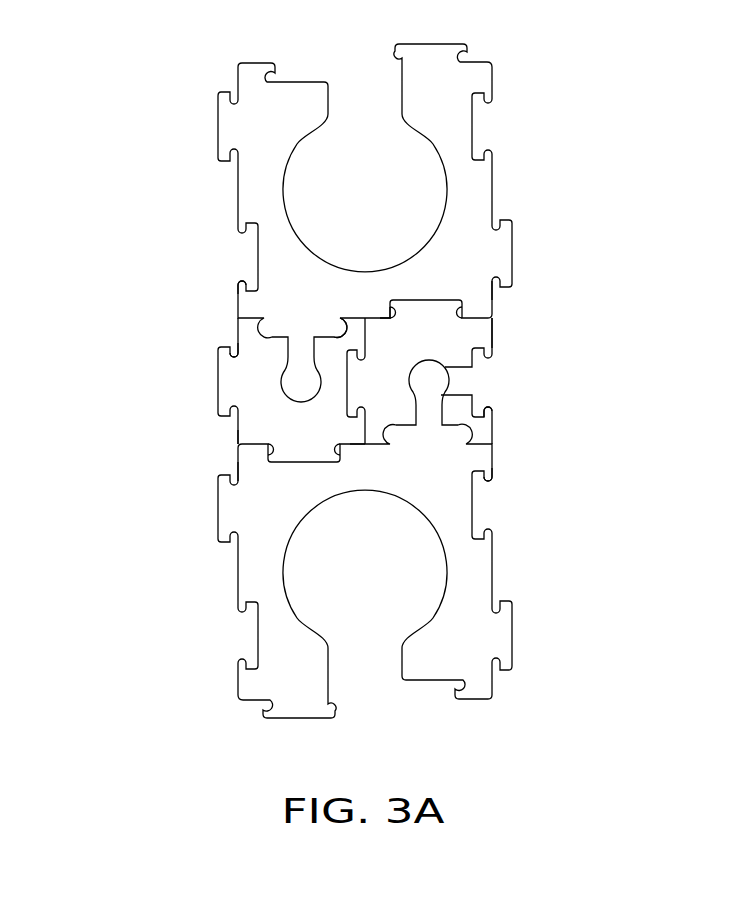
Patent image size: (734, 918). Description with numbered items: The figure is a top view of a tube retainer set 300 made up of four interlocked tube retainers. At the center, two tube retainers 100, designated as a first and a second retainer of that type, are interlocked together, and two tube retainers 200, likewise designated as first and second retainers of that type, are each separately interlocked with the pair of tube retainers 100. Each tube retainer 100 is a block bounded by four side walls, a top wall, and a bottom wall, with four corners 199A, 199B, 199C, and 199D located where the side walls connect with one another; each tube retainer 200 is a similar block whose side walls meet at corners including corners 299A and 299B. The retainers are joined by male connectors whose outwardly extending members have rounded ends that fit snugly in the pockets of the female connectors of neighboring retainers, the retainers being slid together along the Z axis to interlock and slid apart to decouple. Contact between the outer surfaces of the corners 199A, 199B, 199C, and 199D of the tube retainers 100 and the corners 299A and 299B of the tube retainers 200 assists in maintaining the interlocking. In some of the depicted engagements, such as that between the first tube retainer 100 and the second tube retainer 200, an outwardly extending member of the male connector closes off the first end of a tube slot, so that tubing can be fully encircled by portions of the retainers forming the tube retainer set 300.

The tube retainer 100 is at (262, 400).
The tube retainer 200 is at (483, 252).
The corner 199A is at (379, 318).
The corner 199B is at (378, 444).
The corner 199C is at (328, 318).
The corner 199D is at (240, 322).
The corner 299A is at (238, 297).
The corner 299B is at (470, 300).
The tube retainer set 300 is at (400, 397).